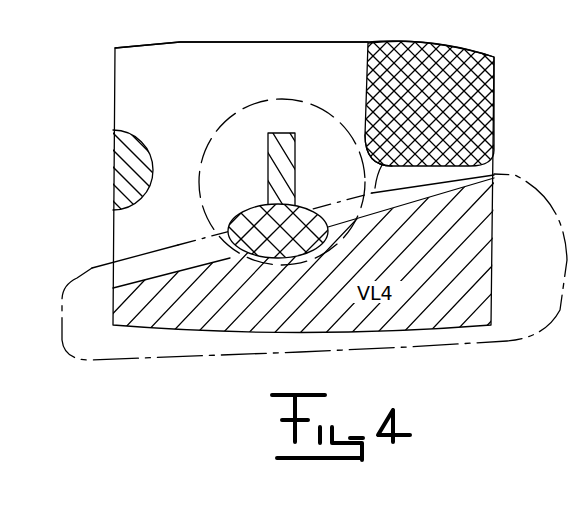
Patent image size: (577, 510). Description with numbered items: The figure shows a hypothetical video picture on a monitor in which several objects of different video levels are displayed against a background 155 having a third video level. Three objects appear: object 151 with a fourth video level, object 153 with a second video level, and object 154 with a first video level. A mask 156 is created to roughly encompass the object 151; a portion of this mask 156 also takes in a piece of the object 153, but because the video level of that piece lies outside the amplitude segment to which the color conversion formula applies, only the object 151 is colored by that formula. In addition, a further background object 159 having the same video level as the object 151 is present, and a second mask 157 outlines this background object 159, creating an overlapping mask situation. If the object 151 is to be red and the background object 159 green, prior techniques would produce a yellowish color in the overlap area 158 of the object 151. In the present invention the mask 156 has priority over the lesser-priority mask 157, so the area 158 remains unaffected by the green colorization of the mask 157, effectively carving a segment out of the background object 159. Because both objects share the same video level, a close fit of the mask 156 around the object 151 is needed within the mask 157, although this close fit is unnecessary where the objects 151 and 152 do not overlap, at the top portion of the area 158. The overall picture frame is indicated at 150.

The display panel 150 is at (336, 41).
The object 151 is at (268, 152).
The object 152 is at (372, 143).
The object 153 is at (495, 75).
The object 154 is at (113, 195).
The background 155 is at (278, 22).
The mask 156 is at (236, 108).
The mask 157 is at (204, 241).
The area 158 is at (330, 242).
The background object 159 is at (463, 283).